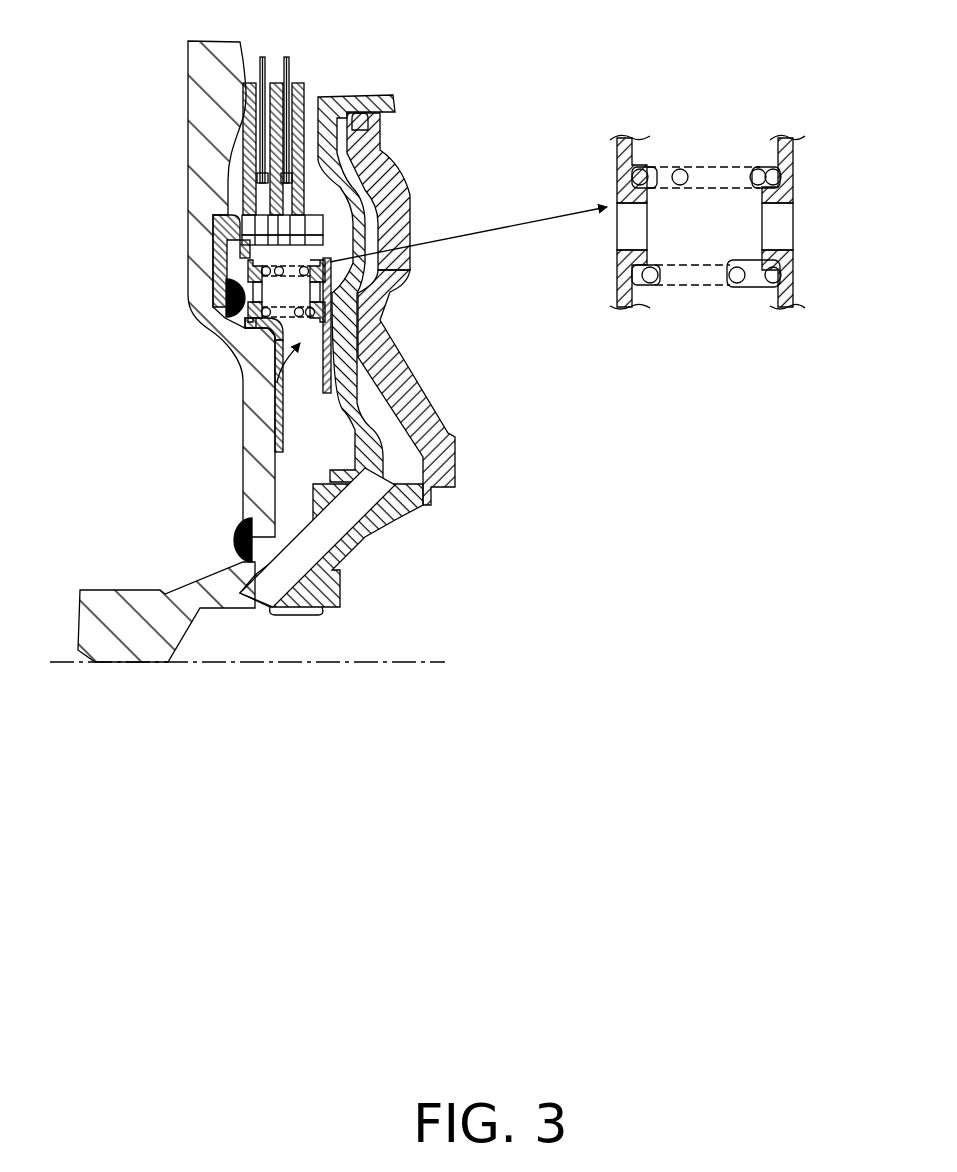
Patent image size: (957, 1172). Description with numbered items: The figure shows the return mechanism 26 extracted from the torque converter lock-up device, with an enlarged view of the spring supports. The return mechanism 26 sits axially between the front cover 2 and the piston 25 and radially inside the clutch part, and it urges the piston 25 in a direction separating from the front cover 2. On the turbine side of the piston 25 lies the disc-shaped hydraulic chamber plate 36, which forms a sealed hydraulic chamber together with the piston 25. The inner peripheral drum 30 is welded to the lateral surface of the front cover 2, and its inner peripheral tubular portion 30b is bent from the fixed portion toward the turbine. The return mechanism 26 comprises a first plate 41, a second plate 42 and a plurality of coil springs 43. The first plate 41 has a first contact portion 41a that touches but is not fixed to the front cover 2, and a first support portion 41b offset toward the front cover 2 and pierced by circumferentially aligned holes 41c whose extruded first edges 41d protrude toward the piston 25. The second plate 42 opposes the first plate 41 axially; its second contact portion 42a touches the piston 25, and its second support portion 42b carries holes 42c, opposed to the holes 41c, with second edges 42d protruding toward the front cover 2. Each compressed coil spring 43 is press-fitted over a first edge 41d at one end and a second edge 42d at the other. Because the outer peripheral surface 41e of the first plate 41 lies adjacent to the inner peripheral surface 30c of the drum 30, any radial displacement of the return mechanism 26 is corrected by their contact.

The front cover 2 is at (192, 187).
The piston 25 is at (393, 172).
The return mechanism 26 is at (243, 390).
The inner peripheral drum 30 is at (213, 222).
The inner peripheral tubular portion 30b is at (313, 215).
The inner peripheral surface 30c is at (240, 150).
The hydraulic chamber plate 36 is at (372, 137).
The first plate 41 is at (270, 350).
The first contact portion 41a is at (277, 422).
The first support portion 41b is at (232, 332).
The holes 41c is at (617, 213).
The first edges 41d is at (643, 197).
The outer peripheral surface 41e is at (240, 250).
The second plate 42 is at (360, 343).
The second contact portion 42a is at (325, 347).
The second support portion 42b is at (405, 238).
The holes 42c is at (793, 213).
The second edges 42d is at (725, 287).
The coil springs 43 is at (228, 232).